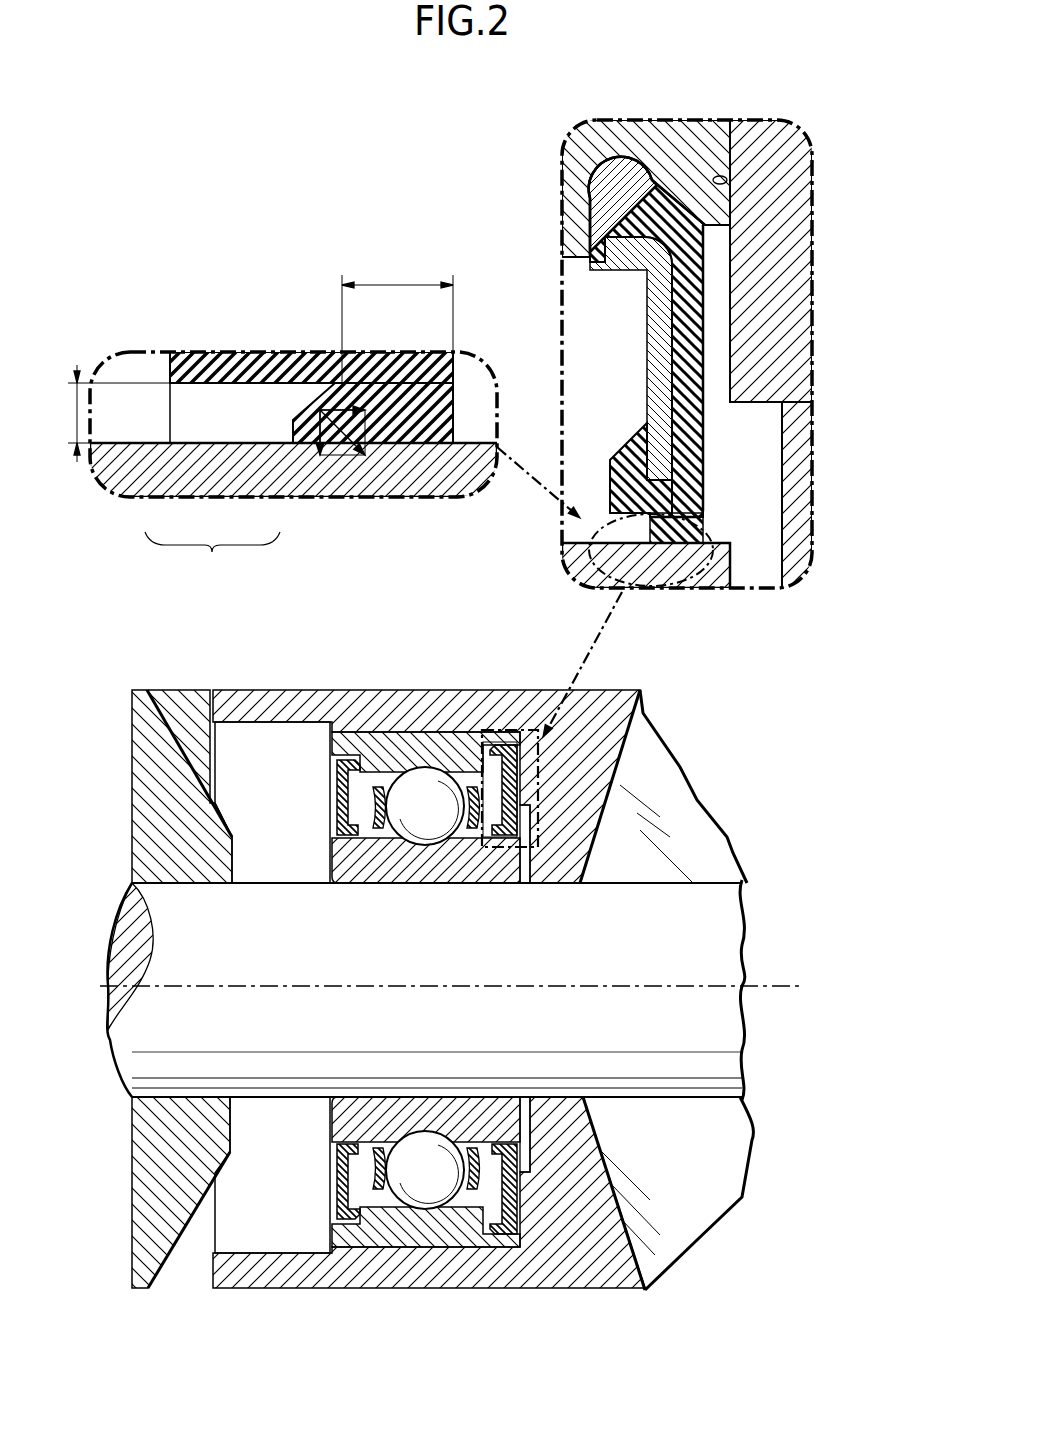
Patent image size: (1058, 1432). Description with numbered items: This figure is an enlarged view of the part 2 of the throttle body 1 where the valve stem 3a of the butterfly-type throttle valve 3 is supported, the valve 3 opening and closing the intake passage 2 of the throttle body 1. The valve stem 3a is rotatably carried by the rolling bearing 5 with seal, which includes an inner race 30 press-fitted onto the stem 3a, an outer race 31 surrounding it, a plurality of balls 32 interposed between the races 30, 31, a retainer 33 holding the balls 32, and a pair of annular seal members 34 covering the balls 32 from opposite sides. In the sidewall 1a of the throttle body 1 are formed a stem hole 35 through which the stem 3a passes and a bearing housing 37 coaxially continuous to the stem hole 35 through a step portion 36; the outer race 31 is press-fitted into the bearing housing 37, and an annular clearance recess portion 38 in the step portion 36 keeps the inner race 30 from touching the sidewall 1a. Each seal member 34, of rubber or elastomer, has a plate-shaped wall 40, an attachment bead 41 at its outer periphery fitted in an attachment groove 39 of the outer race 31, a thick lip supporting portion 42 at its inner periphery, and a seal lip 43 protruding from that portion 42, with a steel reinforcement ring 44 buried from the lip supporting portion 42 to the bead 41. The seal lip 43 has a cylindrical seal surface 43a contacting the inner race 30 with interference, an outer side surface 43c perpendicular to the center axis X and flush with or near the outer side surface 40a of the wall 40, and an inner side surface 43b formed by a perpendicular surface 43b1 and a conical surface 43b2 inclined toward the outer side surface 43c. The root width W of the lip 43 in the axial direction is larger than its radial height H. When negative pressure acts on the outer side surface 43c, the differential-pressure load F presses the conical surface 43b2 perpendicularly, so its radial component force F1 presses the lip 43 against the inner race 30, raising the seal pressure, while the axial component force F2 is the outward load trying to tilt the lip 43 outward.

The throttle body 1 is at (280, 690).
The sidewall 1a is at (573, 777).
The intake passage 2 is at (597, 1153).
The throttle valve 3 is at (630, 866).
The valve stem 3a is at (413, 1028).
The rolling bearing with seal 5 is at (420, 730).
The inner race 30 is at (423, 860).
The outer race 31 is at (403, 747).
The balls 32 is at (410, 819).
The retainer 33 is at (376, 830).
The annular seal member 34 is at (337, 795).
The stem hole 35 is at (547, 883).
The step portion 36 is at (502, 740).
The bearing housing 37 is at (370, 738).
The clearance recess portion 38 is at (525, 837).
The attachment groove 39 is at (623, 177).
The plate-shaped wall 40 is at (812, 372).
The outer side surface of plate-shaped wall 40a is at (700, 395).
The attachment bead 41 is at (620, 217).
The lip supporting portion 42 is at (243, 350).
The seal lip 43 is at (382, 433).
The seal surface 43a is at (443, 497).
The inner side surface 43b is at (590, 560).
The perpendicular surface 43b1 is at (293, 435).
The conical surface 43b2 is at (300, 425).
The outer side surface 43c is at (453, 410).
The reinforcement ring 44 is at (657, 355).
The load F is at (342, 445).
The radial component force F1 is at (320, 412).
The axial component force F2 is at (342, 410).
The height of seal lip H is at (75, 415).
The width of root of seal lip W is at (407, 282).
The center axis X is at (748, 987).